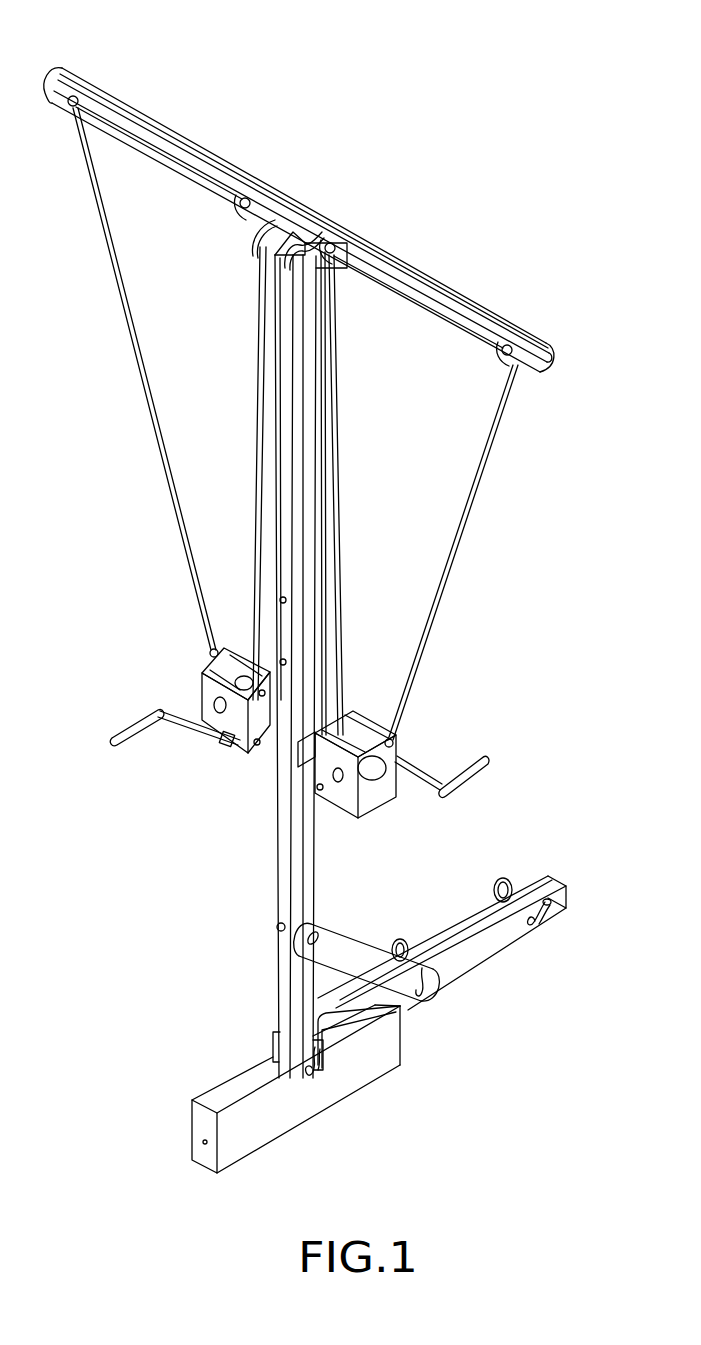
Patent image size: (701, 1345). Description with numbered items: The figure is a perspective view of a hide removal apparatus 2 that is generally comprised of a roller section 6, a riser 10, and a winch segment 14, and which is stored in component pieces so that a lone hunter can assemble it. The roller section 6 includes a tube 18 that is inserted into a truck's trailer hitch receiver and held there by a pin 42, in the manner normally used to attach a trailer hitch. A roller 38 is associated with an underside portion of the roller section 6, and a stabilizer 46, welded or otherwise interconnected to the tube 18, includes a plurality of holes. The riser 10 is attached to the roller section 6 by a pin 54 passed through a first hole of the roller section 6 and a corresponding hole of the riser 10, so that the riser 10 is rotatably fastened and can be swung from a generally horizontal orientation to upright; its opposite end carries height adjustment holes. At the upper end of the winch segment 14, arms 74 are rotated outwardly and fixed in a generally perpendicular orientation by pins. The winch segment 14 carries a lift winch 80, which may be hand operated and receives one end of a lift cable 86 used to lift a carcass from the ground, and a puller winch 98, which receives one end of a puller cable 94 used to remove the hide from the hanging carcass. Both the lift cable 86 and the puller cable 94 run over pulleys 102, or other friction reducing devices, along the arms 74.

The hide removal apparatus 2 is at (392, 224).
The roller section 6 is at (188, 1084).
The riser 10 is at (308, 870).
The winch segment 14 is at (396, 507).
The tube 18 is at (472, 953).
The roller 38 is at (253, 1123).
The pin 42 is at (548, 918).
The stabilizer 46 is at (358, 957).
The pin 54 is at (323, 1065).
The arms 74 is at (165, 155).
The lift winch 80 is at (208, 688).
The lift cable 86 is at (138, 357).
The puller cable 94 is at (500, 423).
The puller winch 98 is at (400, 743).
The pulleys 102 is at (78, 85).